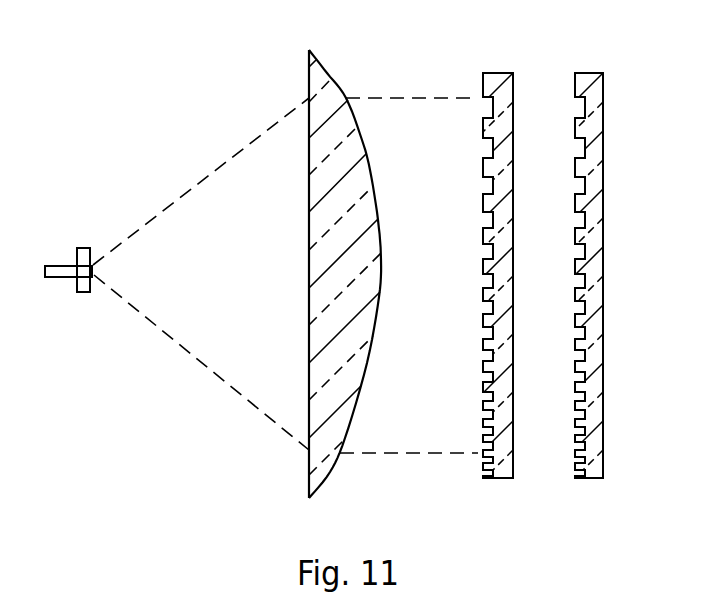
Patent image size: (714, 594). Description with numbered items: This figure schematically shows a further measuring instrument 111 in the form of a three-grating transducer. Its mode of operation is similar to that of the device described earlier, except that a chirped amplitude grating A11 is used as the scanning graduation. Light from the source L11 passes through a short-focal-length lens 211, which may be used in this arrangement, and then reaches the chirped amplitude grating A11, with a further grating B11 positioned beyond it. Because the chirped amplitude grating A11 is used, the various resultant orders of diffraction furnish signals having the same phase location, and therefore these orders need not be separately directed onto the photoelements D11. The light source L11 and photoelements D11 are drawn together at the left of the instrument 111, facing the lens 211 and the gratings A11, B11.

The light source lead L11 is at (66, 265).
The photoelements D11 is at (92, 294).
The measuring instrument 111 is at (210, 380).
The short-focal-length lens 211 is at (318, 456).
The chirped amplitude grating A11 is at (511, 73).
The second grating plate B11 is at (588, 78).